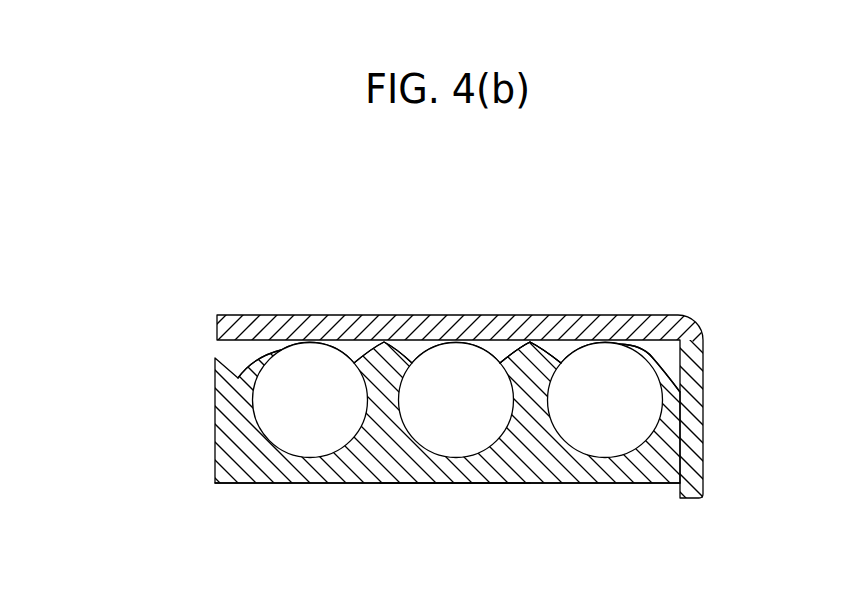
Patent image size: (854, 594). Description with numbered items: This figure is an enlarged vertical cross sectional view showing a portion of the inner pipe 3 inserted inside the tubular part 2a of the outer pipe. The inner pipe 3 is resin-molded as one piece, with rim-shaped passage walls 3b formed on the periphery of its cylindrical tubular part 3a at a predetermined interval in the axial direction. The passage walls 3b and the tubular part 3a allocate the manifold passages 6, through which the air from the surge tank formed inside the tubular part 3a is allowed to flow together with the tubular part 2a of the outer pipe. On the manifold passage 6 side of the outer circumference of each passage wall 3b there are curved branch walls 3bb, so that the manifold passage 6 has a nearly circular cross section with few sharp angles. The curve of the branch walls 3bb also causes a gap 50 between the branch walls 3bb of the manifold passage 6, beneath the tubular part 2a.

The tubular part of the outer pipe 2a is at (498, 315).
The inner pipe 3 is at (238, 428).
The cylindrical tubular part 3a is at (462, 468).
The passage wall 3b is at (248, 432).
The curved branch wall 3bb is at (260, 352).
The manifold passage 6 is at (313, 422).
The gap 50 is at (530, 354).